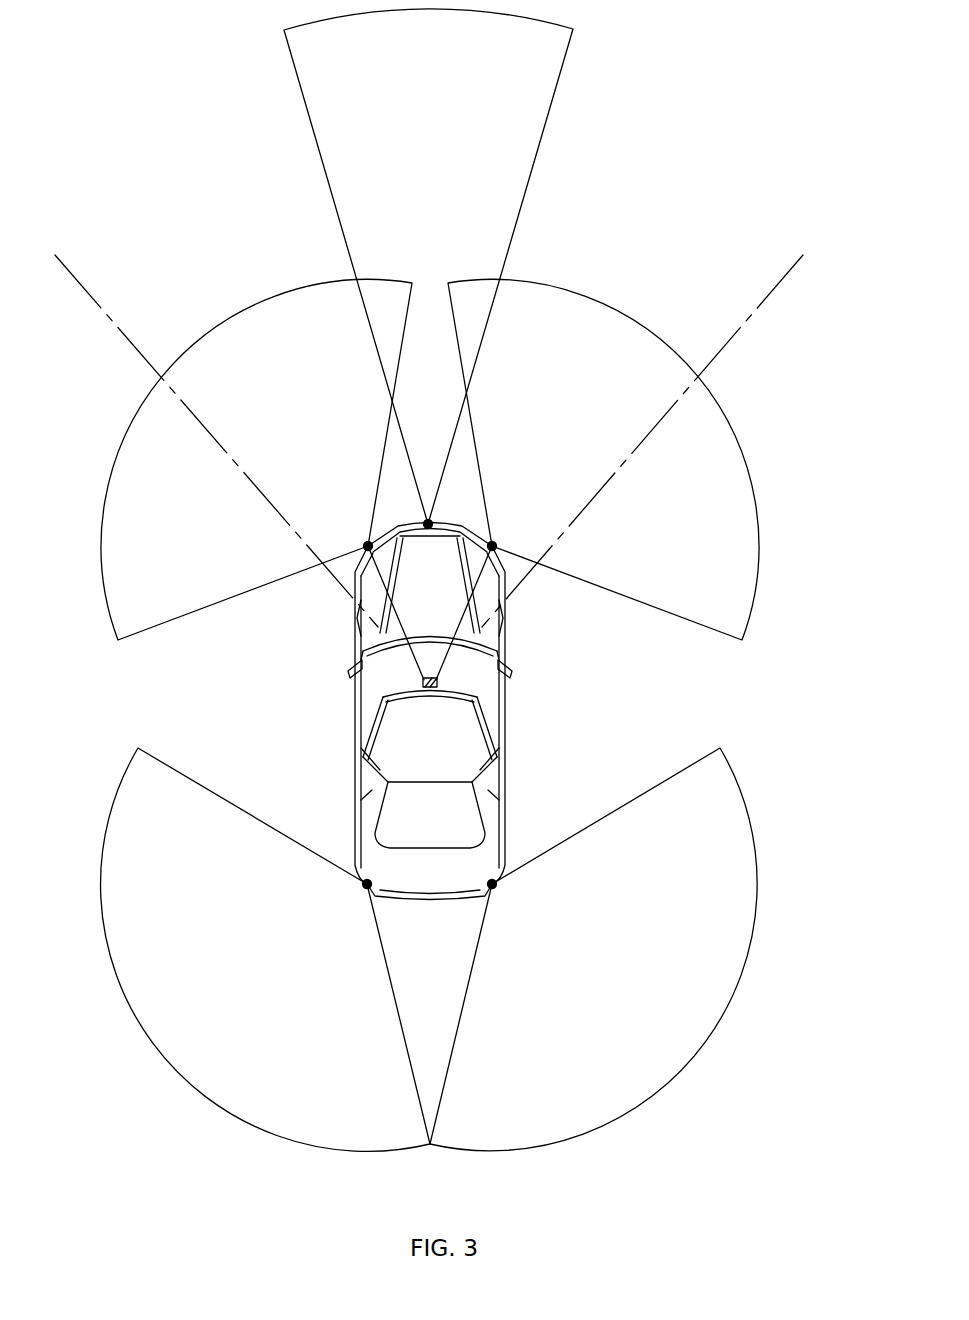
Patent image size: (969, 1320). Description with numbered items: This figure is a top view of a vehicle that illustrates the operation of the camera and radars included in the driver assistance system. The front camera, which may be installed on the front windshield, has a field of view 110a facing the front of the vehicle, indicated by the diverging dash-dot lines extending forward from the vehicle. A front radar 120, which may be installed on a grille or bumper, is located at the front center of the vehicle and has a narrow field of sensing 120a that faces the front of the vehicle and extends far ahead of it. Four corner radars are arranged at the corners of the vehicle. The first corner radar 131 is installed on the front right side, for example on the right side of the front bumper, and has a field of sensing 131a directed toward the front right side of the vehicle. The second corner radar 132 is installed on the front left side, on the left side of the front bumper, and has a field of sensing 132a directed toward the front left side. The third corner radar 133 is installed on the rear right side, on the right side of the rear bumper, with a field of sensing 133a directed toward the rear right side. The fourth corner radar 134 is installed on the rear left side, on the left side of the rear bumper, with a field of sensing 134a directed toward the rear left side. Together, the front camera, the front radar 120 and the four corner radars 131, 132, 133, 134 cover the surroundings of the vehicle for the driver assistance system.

The field of view 110a is at (763, 306).
The front radar 120 is at (429, 522).
The field of sensing 120a is at (525, 142).
The first corner radar 131 is at (494, 545).
The field of sensing 131a is at (632, 335).
The second corner radar 132 is at (366, 545).
The field of sensing 132a is at (228, 335).
The third corner radar 133 is at (494, 888).
The field of sensing 133a is at (705, 1026).
The fourth corner radar 134 is at (366, 888).
The field of sensing 134a is at (153, 1027).